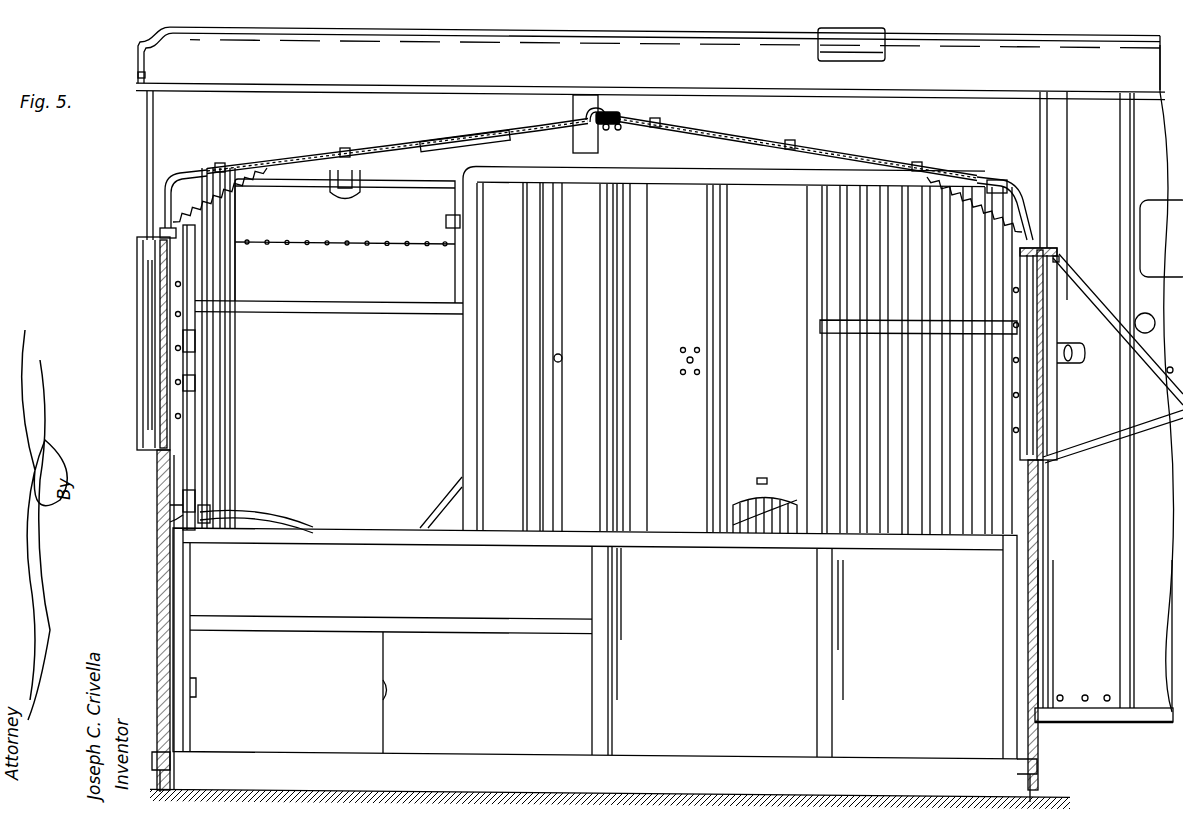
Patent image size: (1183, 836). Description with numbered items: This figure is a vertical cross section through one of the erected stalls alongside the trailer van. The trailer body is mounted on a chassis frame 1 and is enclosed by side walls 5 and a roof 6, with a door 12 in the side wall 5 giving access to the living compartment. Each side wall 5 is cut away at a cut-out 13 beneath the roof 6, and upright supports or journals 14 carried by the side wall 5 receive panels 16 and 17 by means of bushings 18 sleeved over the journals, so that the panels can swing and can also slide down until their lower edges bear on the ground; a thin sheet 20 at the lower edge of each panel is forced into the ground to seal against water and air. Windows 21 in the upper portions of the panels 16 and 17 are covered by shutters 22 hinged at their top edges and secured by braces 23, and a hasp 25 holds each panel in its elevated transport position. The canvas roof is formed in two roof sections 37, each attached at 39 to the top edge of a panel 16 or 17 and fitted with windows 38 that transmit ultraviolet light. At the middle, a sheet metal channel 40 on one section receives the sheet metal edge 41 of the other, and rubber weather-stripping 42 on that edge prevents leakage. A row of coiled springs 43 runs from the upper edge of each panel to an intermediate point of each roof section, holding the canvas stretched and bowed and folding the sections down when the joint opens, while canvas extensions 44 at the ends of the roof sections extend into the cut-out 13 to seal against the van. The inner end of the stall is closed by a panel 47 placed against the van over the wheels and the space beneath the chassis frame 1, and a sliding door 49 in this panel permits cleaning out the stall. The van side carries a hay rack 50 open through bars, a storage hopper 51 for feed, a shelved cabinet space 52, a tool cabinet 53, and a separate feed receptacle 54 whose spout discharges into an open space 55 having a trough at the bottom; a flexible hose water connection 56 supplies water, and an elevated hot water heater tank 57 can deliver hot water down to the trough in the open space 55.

The chassis frame 1 is at (1098, 724).
The side wall 5 is at (1095, 693).
The roof 6 is at (1162, 55).
The door 12 is at (1153, 700).
The cut-out 13 is at (1050, 638).
The upright support or journal 14 is at (172, 505).
The panel 16 is at (155, 478).
The panel 17 is at (1043, 520).
The bushing 18 is at (195, 340).
The thin sheet 20 is at (160, 778).
The window 21 is at (158, 378).
The shutter 22 is at (140, 400).
The brace 23 is at (152, 342).
The hasp 25 is at (1077, 363).
The roof section 37 is at (385, 131).
The window 38 is at (300, 142).
The roof attachment 39 is at (1045, 240).
The sheet metal channel 40 is at (622, 124).
The sheet metal edge 41 is at (595, 108).
The rubber weather-stripping 42 is at (606, 130).
The coiled spring 43 is at (235, 178).
The canvas extension 44 is at (945, 88).
The panel 47 is at (715, 745).
The door 49 is at (262, 638).
The hay rack 50 is at (907, 532).
The storage hopper 51 is at (745, 197).
The cabinet space 52 is at (660, 540).
The cabinet 53 is at (566, 540).
The feed receptacle 54 is at (485, 416).
The open space 55 is at (788, 468).
The water connection 56 is at (205, 505).
The hot water heater tank 57 is at (405, 176).